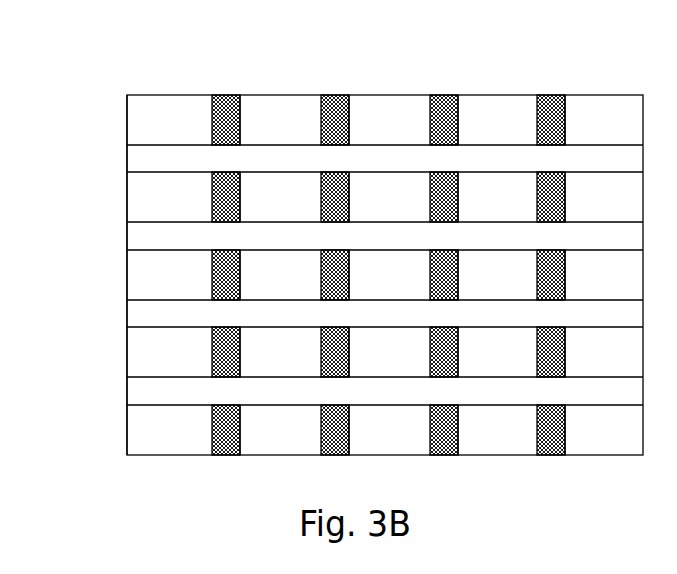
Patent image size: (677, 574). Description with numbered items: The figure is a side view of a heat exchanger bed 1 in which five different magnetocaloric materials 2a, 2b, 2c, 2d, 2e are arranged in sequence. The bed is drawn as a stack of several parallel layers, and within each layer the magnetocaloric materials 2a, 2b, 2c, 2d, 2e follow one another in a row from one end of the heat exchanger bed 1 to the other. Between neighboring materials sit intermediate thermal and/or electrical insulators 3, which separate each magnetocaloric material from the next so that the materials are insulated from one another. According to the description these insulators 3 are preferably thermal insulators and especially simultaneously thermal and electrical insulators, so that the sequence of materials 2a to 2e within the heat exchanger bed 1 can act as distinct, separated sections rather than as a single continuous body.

The heat exchanger bed 1 is at (110, 120).
The magnetocaloric material 2a is at (158, 275).
The magnetocaloric material 2b is at (271, 275).
The magnetocaloric material 2c is at (379, 275).
The magnetocaloric material 2d is at (488, 275).
The magnetocaloric material 2e is at (595, 275).
The intermediate thermal and/or electrical insulator 3 is at (558, 115).